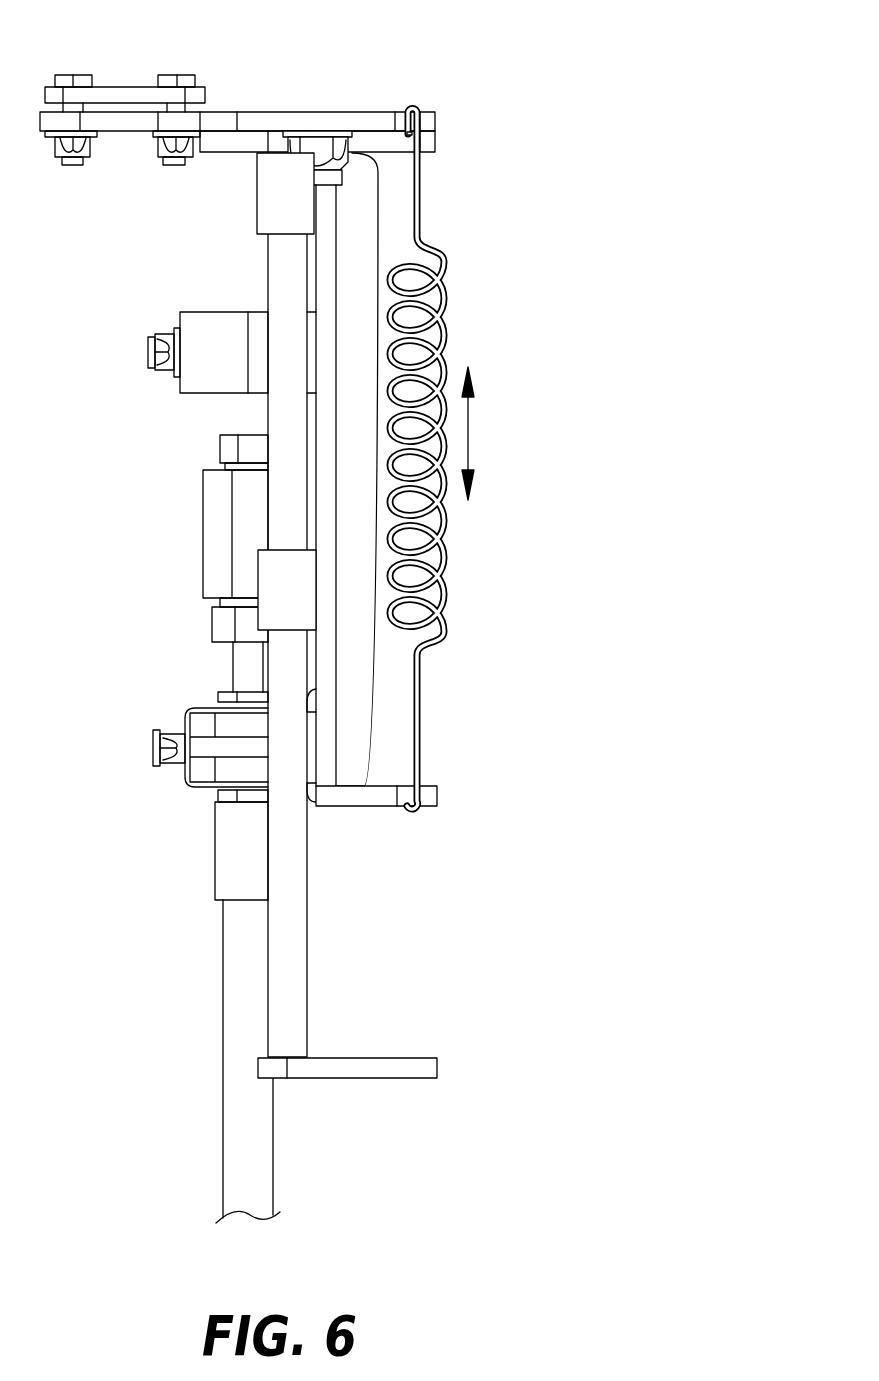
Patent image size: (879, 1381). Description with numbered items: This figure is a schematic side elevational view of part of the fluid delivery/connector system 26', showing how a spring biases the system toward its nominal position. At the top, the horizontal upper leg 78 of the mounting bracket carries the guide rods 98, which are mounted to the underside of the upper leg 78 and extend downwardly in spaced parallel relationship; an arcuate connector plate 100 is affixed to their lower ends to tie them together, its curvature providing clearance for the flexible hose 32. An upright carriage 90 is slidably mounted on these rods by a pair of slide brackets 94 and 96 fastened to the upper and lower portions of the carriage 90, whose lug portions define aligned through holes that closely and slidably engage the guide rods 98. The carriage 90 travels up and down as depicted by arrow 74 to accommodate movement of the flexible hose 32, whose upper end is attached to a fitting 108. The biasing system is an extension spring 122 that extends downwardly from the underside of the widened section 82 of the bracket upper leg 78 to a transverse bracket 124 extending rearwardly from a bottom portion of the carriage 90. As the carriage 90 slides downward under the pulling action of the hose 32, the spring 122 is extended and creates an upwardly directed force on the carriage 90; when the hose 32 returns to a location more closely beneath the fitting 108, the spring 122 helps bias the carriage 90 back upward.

The fluid delivery/connector system 26' is at (321, 612).
The horizontal upper leg 78 is at (355, 112).
The widened section 82 is at (422, 123).
The slide bracket 94 is at (261, 197).
The carriage 90 is at (343, 272).
The extension spring 122 is at (447, 326).
The arrow 74 is at (471, 430).
The slide bracket 96 is at (264, 591).
The transverse bracket 124 is at (357, 802).
The fitting 108 is at (227, 878).
The guide rods 98 is at (301, 940).
The flexible hose 32 is at (233, 1092).
The arcuate connector plate 100 is at (406, 1068).